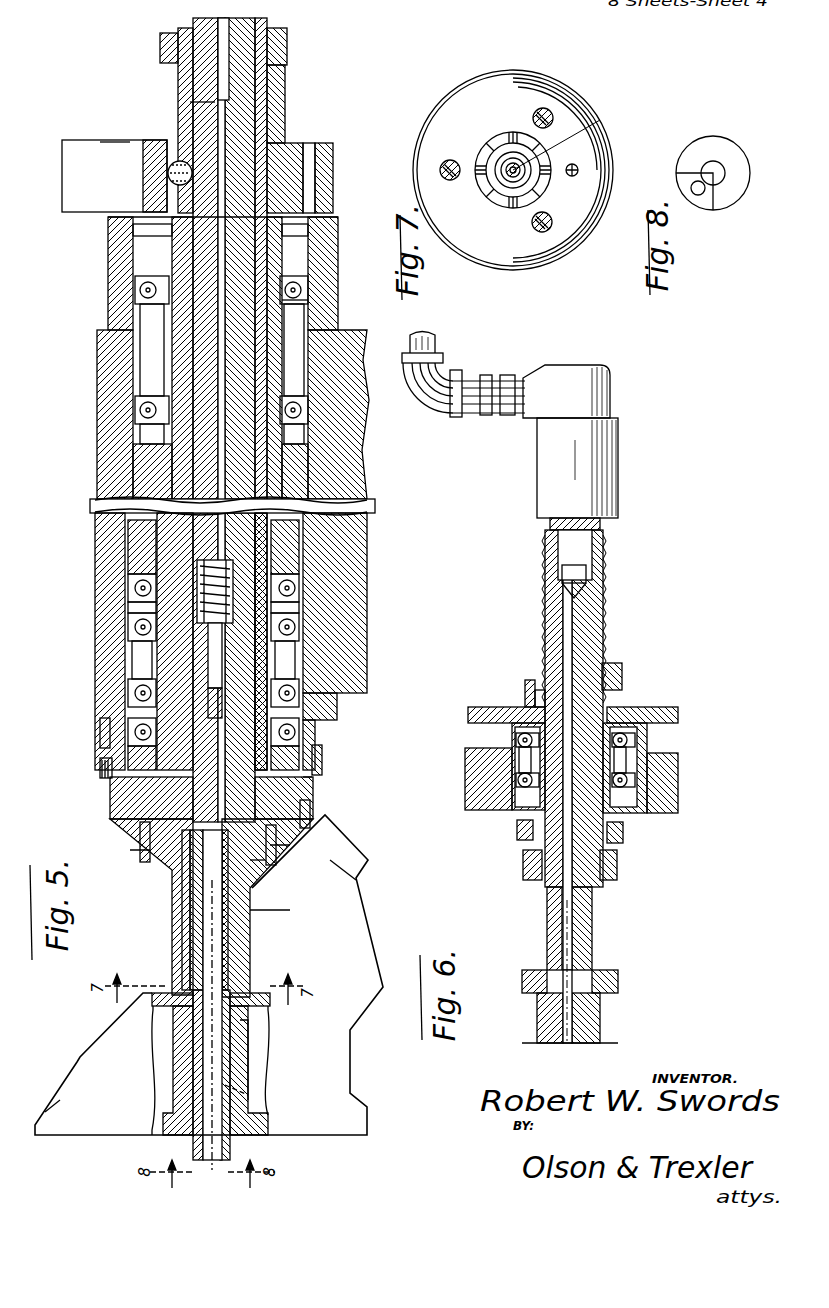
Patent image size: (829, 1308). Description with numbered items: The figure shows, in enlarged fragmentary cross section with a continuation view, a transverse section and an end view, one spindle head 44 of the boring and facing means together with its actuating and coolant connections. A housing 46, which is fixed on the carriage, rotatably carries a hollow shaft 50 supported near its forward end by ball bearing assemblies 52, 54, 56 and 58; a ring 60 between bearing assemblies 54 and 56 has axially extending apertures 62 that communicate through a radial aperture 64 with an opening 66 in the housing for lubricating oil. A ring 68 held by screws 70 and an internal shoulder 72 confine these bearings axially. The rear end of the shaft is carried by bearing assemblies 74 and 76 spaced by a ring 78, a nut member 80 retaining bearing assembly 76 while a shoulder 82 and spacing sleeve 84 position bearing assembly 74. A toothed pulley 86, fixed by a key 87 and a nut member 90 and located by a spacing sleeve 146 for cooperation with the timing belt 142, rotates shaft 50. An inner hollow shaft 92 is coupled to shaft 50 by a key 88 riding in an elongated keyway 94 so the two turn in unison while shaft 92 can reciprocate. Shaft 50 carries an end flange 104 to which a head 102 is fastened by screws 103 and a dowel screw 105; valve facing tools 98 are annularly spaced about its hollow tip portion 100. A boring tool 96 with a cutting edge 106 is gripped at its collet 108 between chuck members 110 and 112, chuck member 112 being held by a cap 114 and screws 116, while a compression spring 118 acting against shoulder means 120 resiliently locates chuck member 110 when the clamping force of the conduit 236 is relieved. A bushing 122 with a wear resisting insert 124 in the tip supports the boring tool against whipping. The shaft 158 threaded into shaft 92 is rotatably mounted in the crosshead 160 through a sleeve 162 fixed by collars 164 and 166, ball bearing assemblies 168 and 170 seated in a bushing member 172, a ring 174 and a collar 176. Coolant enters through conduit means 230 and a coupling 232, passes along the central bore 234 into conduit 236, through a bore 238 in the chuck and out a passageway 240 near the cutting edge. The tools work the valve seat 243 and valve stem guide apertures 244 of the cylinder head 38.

In FIG. 5, the workpiece or cylinder head 38 is at (45, 1112).
In FIG. 5, the spindle head 44 is at (100, 276).
In FIG. 5, the housing 46 is at (97, 456).
In FIG. 5, the hollow shaft 50 is at (120, 800).
In FIG. 5, the ball bearing assembly 52 is at (100, 728).
In FIG. 5, the ball bearing assembly 54 is at (110, 740).
In FIG. 5, the ball bearing assembly 56 is at (128, 614).
In FIG. 5, the ball bearing assembly 58 is at (130, 574).
In FIG. 5, the ring 60 is at (128, 680).
In FIG. 5, the axially extending apertures 62 is at (132, 650).
In FIG. 5, the radial aperture 64 is at (122, 717).
In FIG. 5, the opening 66 is at (125, 702).
In FIG. 5, the ring 68 is at (100, 788).
In FIG. 5, the screws 70 is at (330, 796).
In FIG. 5, the internal shoulder 72 is at (155, 578).
In FIG. 5, the bearing assembly 74 is at (135, 410).
In FIG. 5, the bearing assembly 76 is at (130, 298).
In FIG. 5, the ring 78 is at (118, 337).
In FIG. 5, the nut member 80 is at (140, 252).
In FIG. 5, the shoulder 82 is at (155, 433).
In FIG. 5, the spacing sleeve 84 is at (160, 484).
In FIG. 5, the pulley 86 is at (140, 190).
In FIG. 5, the key 87 is at (283, 146).
In FIG. 5, the key 88 is at (176, 150).
In FIG. 5, the nut member 90 is at (160, 48).
In FIG. 5, the hollow shaft 92 is at (320, 300).
In FIG. 5, the elongated keyway 94 is at (190, 102).
In FIG. 5, the boring tool 96 is at (245, 922).
In FIG. 7, the boring tool 96 is at (552, 150).
In FIG. 8, the boring tool 96 is at (742, 150).
In FIG. 5, the valve facing tool 98 is at (268, 1010).
In FIG. 6, the valve facing tool 98 is at (538, 1025).
In FIG. 5, the hollow tip portion 100 is at (186, 930).
In FIG. 7, the hollow tip portion 100 is at (545, 185).
In FIG. 7, the cap or head 102 is at (493, 132).
In FIG. 5, the screws 103 is at (150, 862).
In FIG. 7, the screws 103 is at (545, 232).
In FIG. 5, the end flange 104 is at (352, 845).
In FIG. 5, the dowel screw 105 is at (290, 910).
In FIG. 7, the dowel screw 105 is at (580, 170).
In FIG. 8, the cutting edge 106 is at (680, 175).
In FIG. 5, the collet 108 is at (130, 850).
In FIG. 5, the chuck member 110 is at (310, 808).
In FIG. 5, the chuck member 112 is at (330, 880).
In FIG. 5, the cap 114 is at (265, 862).
In FIG. 5, the screws 116 is at (176, 880).
In FIG. 5, the compression spring 118 is at (330, 632).
In FIG. 5, the shoulder means 120 is at (330, 562).
In FIG. 5, the bushing 122 is at (225, 948).
In FIG. 7, the bushing 122 is at (510, 190).
In FIG. 5, the wear resisting insert 124 is at (245, 1040).
In FIG. 7, the wear resisting insert 124 is at (520, 190).
In FIG. 5, the timing belt 142 is at (100, 142).
In FIG. 5, the spacing sleeve 146 is at (288, 112).
In FIG. 6, the shaft 158 is at (595, 895).
In FIG. 6, the crosshead or yoke 160 is at (465, 794).
In FIG. 6, the sleeve 162 is at (528, 705).
In FIG. 6, the collar 164 is at (622, 840).
In FIG. 6, the collar 166 is at (622, 680).
In FIG. 6, the ball bearing assembly 168 is at (470, 737).
In FIG. 6, the ball bearing assembly 170 is at (520, 700).
In FIG. 6, the bushing member 172 is at (520, 830).
In FIG. 6, the ring 174 is at (662, 712).
In FIG. 6, the collar 176 is at (525, 850).
In FIG. 6, the conduit means 230 is at (470, 400).
In FIG. 6, the coupling or union 232 is at (540, 503).
In FIG. 6, the central bore 234 is at (592, 978).
In FIG. 5, the conduit 236 is at (288, 72).
In FIG. 6, the conduit 236 is at (605, 1035).
In FIG. 5, the bore 238 is at (320, 728).
In FIG. 5, the passageway 240 is at (235, 1092).
In FIG. 7, the passageway 240 is at (505, 152).
In FIG. 8, the passageway 240 is at (698, 196).
In FIG. 5, the valve seat 243 is at (158, 1030).
In FIG. 5, the valve stem guide apertures 244 is at (190, 1086).